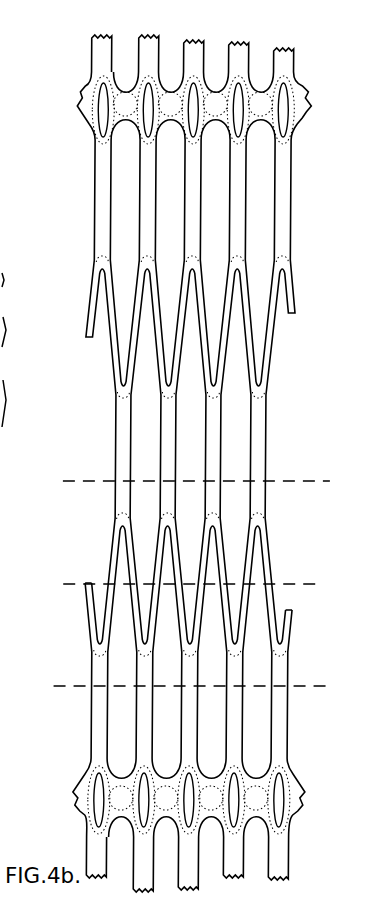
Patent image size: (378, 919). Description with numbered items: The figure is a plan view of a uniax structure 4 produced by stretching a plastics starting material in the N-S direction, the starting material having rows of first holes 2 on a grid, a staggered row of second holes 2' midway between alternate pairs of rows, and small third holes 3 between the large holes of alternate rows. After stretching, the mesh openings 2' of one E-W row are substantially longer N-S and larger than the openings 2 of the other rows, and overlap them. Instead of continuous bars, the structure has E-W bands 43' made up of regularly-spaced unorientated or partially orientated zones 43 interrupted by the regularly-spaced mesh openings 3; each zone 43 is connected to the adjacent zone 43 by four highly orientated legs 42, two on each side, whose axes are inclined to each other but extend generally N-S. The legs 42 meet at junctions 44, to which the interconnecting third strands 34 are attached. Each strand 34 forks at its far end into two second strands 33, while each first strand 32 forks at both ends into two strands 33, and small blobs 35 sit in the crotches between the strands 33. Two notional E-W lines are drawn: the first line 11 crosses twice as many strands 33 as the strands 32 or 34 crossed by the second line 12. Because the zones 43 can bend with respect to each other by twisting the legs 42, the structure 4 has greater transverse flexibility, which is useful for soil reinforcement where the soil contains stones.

The first holes 2 is at (191, 449).
The second holes 2' is at (190, 456).
The third holes 3 is at (148, 88).
The uniax structure 4 is at (92, 232).
The first notional E-W line 11 is at (181, 584).
The second notional E-W line 12 is at (179, 584).
The first strands 32 is at (168, 473).
The second strands 33 is at (136, 349).
The third strands 34 is at (194, 218).
The blobs 35 is at (102, 141).
The legs 42 is at (110, 92).
The zones 43 is at (191, 422).
The E-W bands 43' is at (314, 91).
The junctions 44 is at (283, 149).